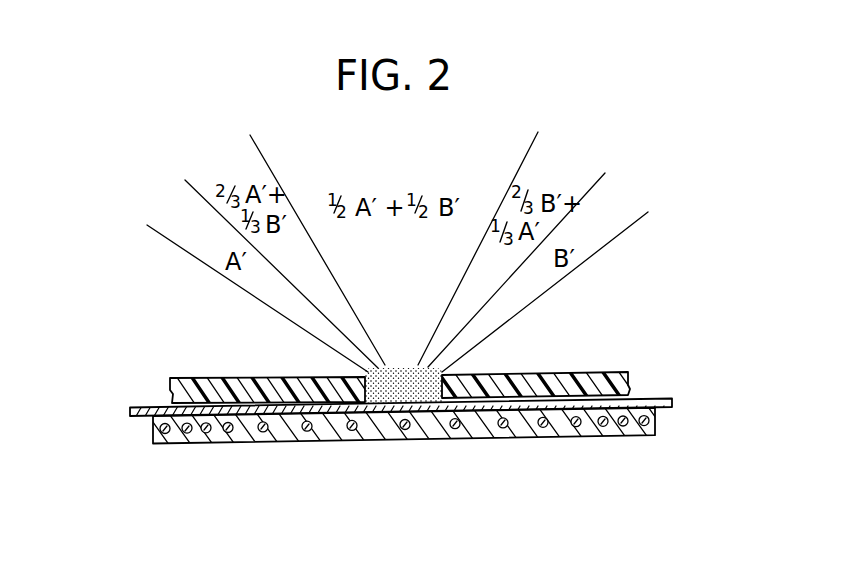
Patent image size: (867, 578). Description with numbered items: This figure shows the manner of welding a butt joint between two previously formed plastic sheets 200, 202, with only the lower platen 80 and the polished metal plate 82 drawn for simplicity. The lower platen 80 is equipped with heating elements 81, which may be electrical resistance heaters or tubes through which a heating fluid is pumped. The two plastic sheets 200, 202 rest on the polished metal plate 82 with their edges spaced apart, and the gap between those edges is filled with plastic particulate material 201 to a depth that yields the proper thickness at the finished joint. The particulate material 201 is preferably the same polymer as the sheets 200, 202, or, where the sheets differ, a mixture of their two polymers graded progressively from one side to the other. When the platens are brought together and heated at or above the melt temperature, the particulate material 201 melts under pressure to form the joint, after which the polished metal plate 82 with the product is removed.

The lower platen 80 is at (383, 433).
The heating elements 81 is at (228, 433).
The polished metal plate 82 is at (673, 402).
The plastic sheet 200 is at (198, 378).
The plastic particulate material 201 is at (400, 369).
The plastic sheet 202 is at (633, 372).